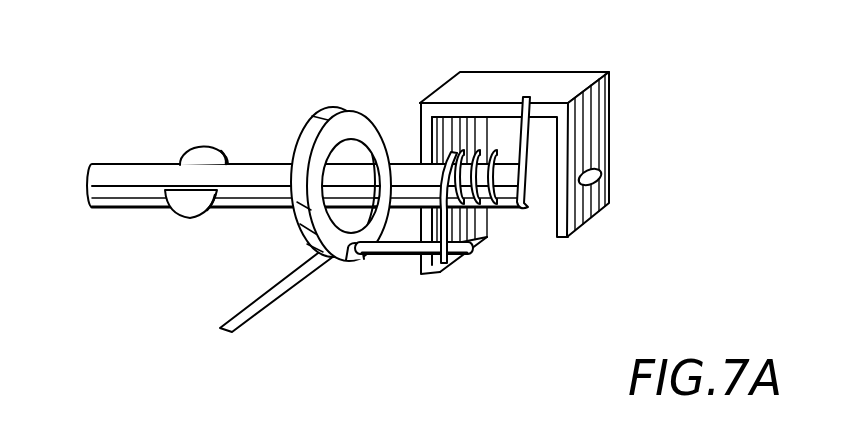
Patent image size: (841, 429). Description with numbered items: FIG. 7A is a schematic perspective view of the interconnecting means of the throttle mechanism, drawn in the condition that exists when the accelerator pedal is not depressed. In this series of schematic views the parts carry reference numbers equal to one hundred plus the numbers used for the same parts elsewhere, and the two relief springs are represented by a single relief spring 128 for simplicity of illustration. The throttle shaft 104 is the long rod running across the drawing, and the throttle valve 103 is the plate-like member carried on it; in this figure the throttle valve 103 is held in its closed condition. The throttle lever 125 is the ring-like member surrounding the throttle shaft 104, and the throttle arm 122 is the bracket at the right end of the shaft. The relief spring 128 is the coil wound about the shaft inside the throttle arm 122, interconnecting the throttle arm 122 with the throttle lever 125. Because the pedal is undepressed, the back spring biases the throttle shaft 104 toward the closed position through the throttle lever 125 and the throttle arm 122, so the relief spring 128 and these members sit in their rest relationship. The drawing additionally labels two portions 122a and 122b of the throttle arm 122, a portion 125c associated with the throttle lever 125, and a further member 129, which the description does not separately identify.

The throttle valve 103 is at (200, 158).
The throttle shaft 104 is at (130, 183).
The throttle arm 122 is at (565, 88).
The hook end of spring wire 122a is at (432, 276).
The side wall of bracket 122b is at (585, 208).
The throttle lever 125 is at (343, 122).
The lower rod / pin 125c is at (400, 253).
The relief spring 128 is at (515, 150).
The strut / arm 129 is at (298, 280).